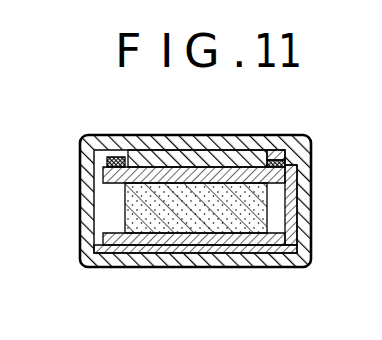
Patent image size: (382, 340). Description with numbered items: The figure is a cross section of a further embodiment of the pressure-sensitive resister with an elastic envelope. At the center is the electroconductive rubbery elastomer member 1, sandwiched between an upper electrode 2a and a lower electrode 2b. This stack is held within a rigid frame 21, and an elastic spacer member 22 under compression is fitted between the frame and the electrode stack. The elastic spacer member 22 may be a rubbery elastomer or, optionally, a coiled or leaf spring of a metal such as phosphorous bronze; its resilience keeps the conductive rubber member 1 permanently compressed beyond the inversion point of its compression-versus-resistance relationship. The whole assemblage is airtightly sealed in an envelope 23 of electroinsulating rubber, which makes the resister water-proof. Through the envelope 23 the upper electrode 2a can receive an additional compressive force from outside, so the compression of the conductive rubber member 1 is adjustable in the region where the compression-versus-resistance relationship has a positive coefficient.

The electroconductive rubbery elastomer member 1 is at (262, 211).
The upper electrode 2a is at (187, 168).
The lower electrode 2b is at (193, 241).
The rigid frame 21 is at (96, 218).
The elastic spacer member 22 is at (118, 156).
The envelope 23 is at (246, 150).